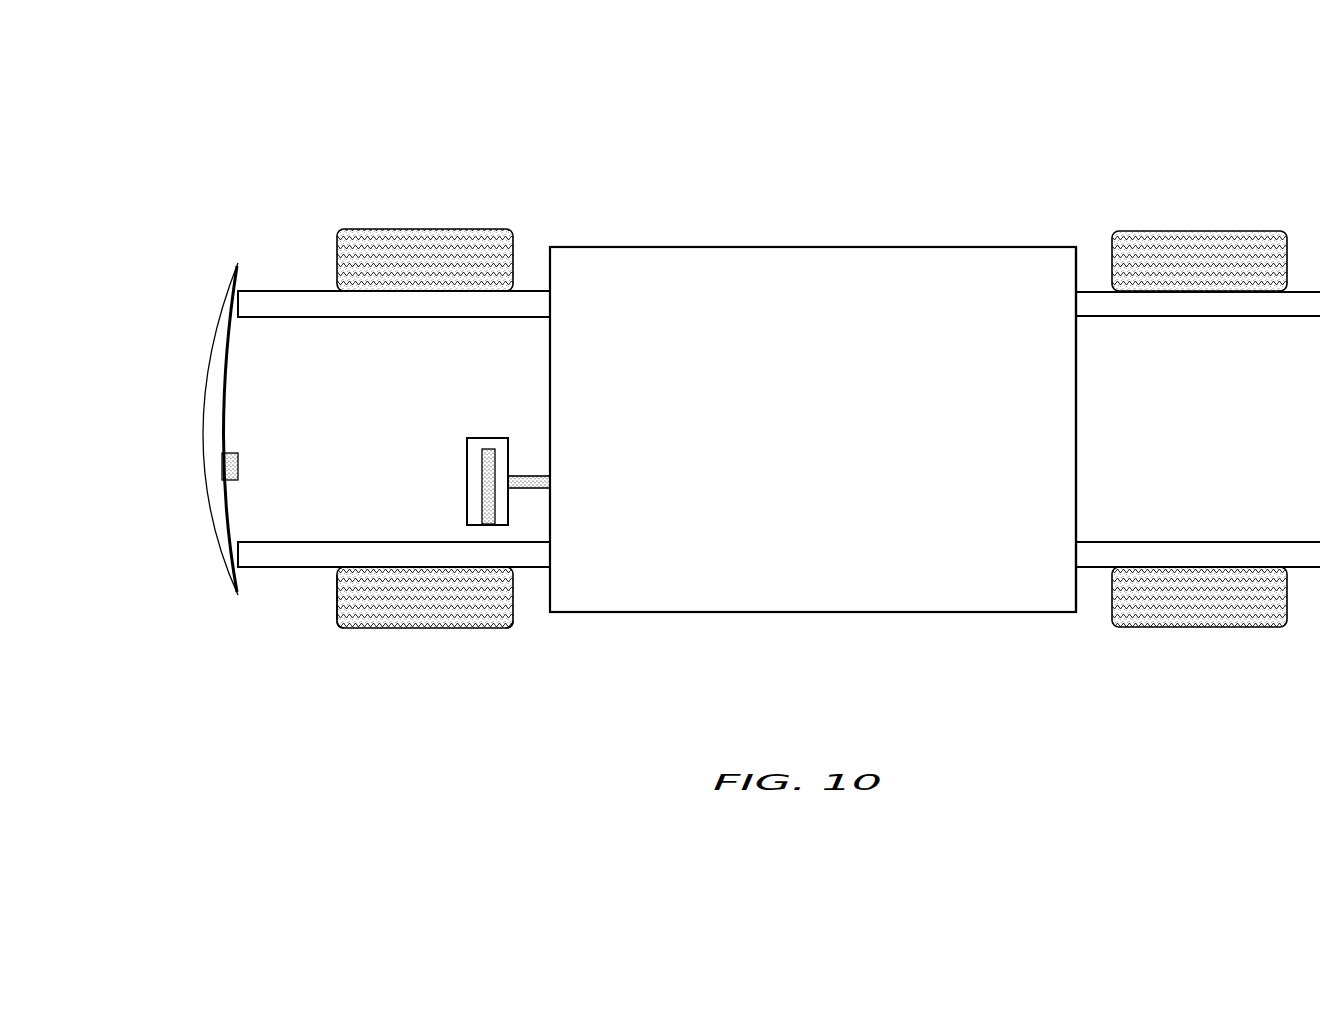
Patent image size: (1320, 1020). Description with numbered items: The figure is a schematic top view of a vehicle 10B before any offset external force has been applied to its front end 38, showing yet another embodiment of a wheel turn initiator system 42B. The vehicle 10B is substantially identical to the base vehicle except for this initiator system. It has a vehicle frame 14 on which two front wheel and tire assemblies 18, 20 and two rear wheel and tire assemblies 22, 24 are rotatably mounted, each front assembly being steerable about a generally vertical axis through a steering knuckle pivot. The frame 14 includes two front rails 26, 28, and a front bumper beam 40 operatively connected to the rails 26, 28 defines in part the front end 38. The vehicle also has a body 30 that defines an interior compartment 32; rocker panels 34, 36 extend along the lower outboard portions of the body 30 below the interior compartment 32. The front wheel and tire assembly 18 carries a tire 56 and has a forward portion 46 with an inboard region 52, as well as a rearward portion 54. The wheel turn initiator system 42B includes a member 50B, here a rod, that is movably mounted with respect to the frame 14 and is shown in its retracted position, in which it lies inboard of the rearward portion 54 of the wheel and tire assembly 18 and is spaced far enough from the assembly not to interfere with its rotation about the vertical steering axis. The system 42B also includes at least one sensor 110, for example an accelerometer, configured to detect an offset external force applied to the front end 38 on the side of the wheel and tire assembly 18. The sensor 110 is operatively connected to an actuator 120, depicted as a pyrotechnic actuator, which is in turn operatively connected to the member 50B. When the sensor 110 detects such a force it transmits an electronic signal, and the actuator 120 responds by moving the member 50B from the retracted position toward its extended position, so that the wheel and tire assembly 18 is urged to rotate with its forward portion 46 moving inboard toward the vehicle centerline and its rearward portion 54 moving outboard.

The vehicle 10B is at (223, 162).
The vehicle frame 14 is at (1097, 290).
The front wheel and tire assembly 18 is at (425, 628).
The front wheel and tire assembly 20 is at (425, 229).
The rear wheel and tire assembly 22 is at (1198, 628).
The rear wheel and tire assembly 24 is at (1203, 231).
The front rail 26 is at (342, 542).
The front rail 28 is at (351, 317).
The body 30 is at (1077, 428).
The interior compartment 32 is at (825, 441).
The rocker panel 34 is at (812, 613).
The rocker panel 36 is at (787, 247).
The front end 38 is at (203, 446).
The front bumper beam 40 is at (203, 398).
The wheel turn initiator system 42B is at (478, 398).
The forward portion 46 is at (343, 626).
The member 50B is at (494, 492).
The inboard region 52 is at (336, 598).
The rearward portion 54 is at (508, 626).
The tire 56 is at (468, 620).
The sensor 110 is at (234, 453).
The actuator 120 is at (467, 483).